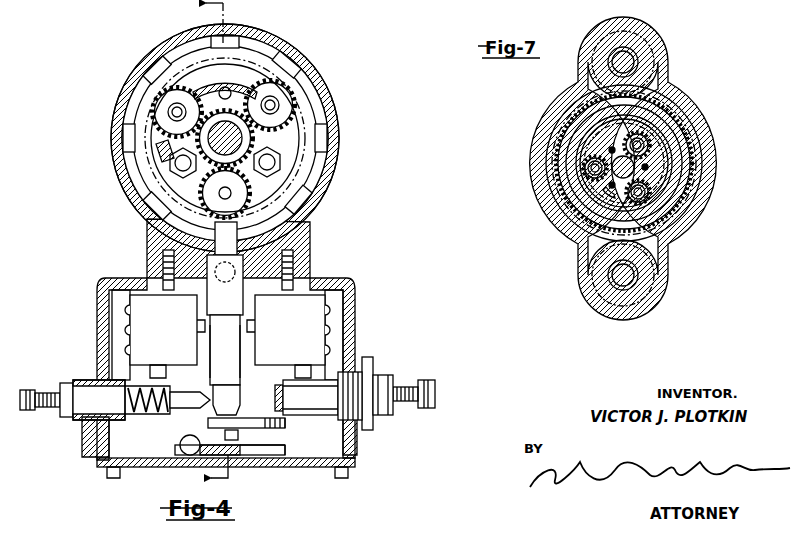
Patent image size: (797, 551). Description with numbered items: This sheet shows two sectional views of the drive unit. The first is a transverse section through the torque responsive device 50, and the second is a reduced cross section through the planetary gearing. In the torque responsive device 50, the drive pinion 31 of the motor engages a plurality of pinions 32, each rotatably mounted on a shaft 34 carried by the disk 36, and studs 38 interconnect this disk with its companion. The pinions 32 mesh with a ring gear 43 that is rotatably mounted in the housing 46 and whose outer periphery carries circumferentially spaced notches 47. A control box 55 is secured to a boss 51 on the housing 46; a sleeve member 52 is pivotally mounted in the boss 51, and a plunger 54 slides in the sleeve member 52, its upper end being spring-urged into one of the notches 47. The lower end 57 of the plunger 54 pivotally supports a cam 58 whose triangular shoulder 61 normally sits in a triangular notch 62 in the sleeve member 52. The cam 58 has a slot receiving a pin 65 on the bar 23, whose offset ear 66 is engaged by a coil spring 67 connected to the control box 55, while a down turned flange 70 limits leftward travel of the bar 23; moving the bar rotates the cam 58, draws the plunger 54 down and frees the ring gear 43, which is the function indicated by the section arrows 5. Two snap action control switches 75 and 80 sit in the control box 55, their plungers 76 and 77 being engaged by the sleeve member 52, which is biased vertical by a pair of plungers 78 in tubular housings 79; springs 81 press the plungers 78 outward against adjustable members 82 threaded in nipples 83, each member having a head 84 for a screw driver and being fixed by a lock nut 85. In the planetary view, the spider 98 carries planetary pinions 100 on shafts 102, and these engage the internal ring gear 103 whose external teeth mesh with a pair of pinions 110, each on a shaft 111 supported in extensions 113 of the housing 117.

In FIG. 4, the section line 5 is at (207, 243).
In FIG. 4, the bar 23 is at (236, 462).
In FIG. 4, the drive pinion 31 is at (217, 96).
In FIG. 4, the pinions 32 is at (291, 98).
In FIG. 4, the shafts 34 is at (272, 106).
In FIG. 4, the disk 36 is at (240, 72).
In FIG. 4, the studs 38 is at (278, 167).
In FIG. 4, the ring gear 43 is at (292, 66).
In FIG. 4, the housing 46 is at (340, 110).
In FIG. 4, the notches 47 is at (146, 63).
In FIG. 4, the torque responsive device 50 is at (106, 170).
In FIG. 4, the boss 51 is at (308, 253).
In FIG. 4, the sleeve member 52 is at (213, 372).
In FIG. 4, the plunger 54 is at (300, 218).
In FIG. 4, the control box 55 is at (352, 328).
In FIG. 4, the lower end of plunger 57 is at (227, 436).
In FIG. 4, the cam 58 is at (280, 425).
In FIG. 4, the triangular shoulder 61 is at (210, 424).
In FIG. 4, the triangular notch 62 is at (247, 388).
In FIG. 4, the pin 65 is at (278, 462).
In FIG. 4, the offset ear 66 is at (177, 458).
In FIG. 4, the coil spring 67 is at (160, 455).
In FIG. 4, the down turned flange 70 is at (290, 470).
In FIG. 4, the snap action control switch 75 is at (166, 326).
In FIG. 4, the switch plunger 76 is at (200, 339).
In FIG. 4, the switch plunger 77 is at (258, 318).
In FIG. 4, the plungers 78 is at (280, 391).
In FIG. 4, the tubular housings 79 is at (108, 441).
In FIG. 4, the snap action control switch 80 is at (302, 347).
In FIG. 4, the springs 81 is at (125, 420).
In FIG. 4, the adjustable member 82 is at (68, 417).
In FIG. 4, the nipple 83 is at (86, 422).
In FIG. 4, the head 84 is at (30, 388).
In FIG. 4, the lock nut 85 is at (70, 378).
In FIG. 7, the spider 98 is at (700, 136).
In FIG. 7, the planetary pinions 100 is at (653, 192).
In FIG. 7, the shafts 102 is at (650, 135).
In FIG. 7, the internal ring gear 103 is at (608, 234).
In FIG. 7, the pinions 110 is at (638, 50).
In FIG. 7, the shaft 111 is at (637, 63).
In FIG. 7, the extensions 113 is at (682, 243).
In FIG. 7, the housing 117 is at (536, 162).